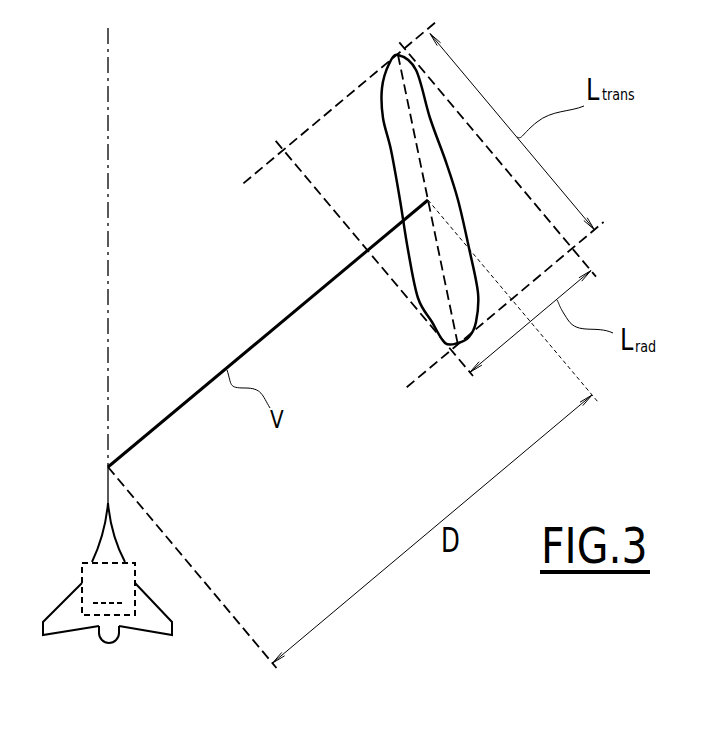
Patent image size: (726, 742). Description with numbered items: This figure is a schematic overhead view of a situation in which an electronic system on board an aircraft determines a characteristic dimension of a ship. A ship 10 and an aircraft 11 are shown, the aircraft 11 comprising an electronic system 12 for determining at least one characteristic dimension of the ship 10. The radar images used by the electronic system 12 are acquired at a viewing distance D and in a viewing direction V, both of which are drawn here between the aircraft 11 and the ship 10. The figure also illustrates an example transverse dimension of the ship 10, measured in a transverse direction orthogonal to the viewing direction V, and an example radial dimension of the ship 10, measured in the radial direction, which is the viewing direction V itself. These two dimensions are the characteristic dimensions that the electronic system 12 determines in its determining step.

The ship 10 is at (393, 170).
The aircraft 11 is at (63, 618).
The electronic system 12 is at (108, 589).